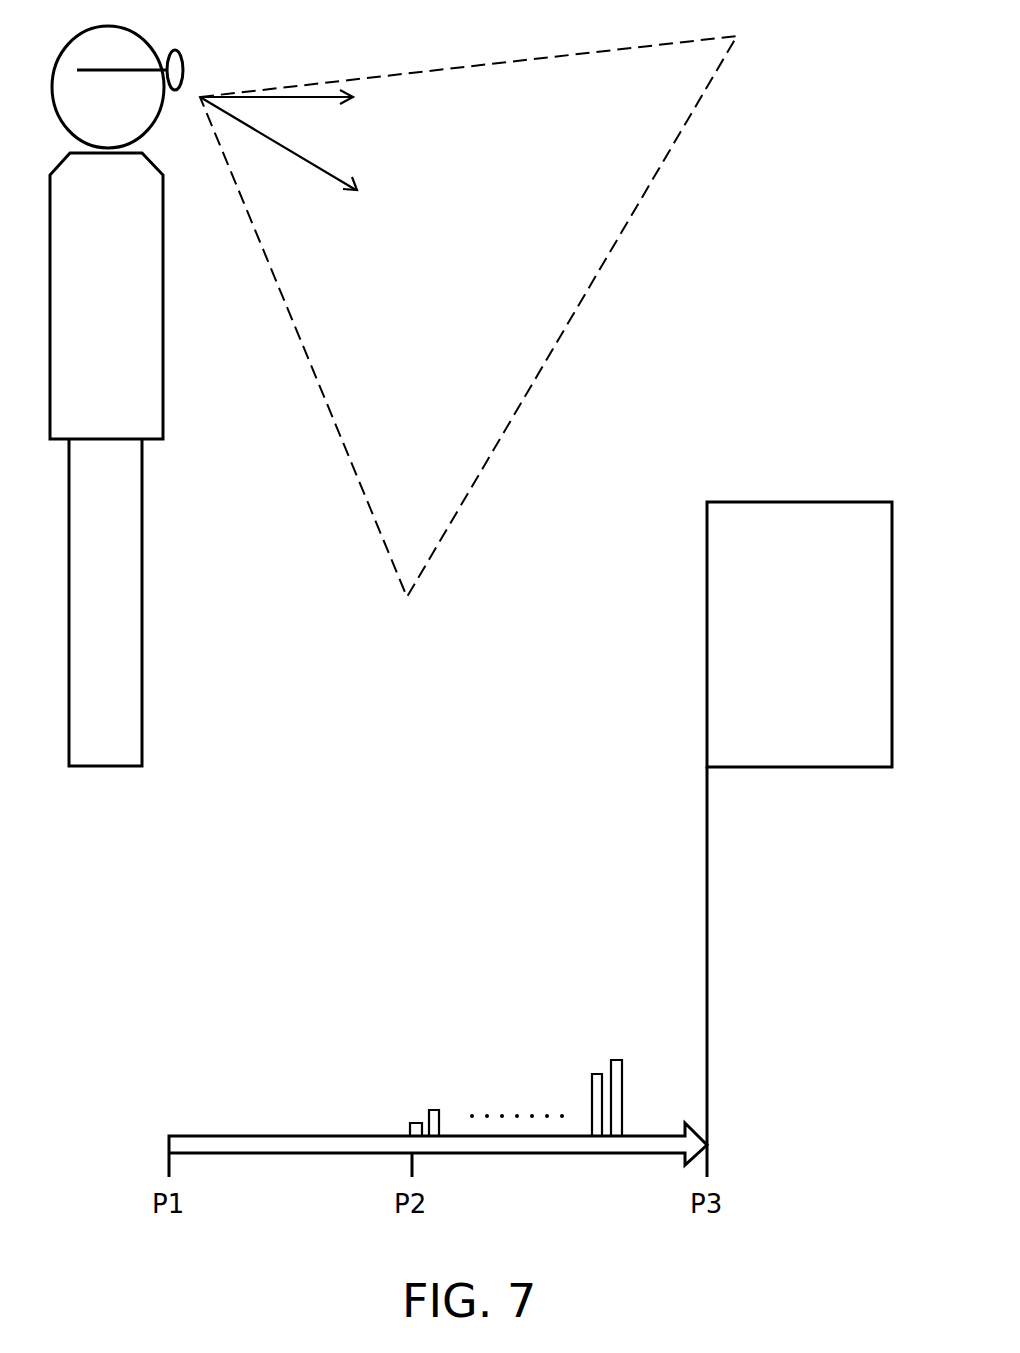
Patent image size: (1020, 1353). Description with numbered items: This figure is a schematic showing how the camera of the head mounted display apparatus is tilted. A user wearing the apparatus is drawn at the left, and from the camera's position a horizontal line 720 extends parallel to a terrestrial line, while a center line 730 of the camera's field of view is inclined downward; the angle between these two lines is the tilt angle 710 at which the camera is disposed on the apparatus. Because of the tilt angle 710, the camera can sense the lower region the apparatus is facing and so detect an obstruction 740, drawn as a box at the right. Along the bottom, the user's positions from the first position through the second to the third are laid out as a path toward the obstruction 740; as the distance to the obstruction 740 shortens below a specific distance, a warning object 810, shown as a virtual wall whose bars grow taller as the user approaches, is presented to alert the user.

The tilt angle 710 is at (277, 99).
The horizontal line 720 is at (313, 97).
The center line 730 is at (317, 168).
The obstruction 740 is at (826, 652).
The warning object 810 is at (614, 1058).